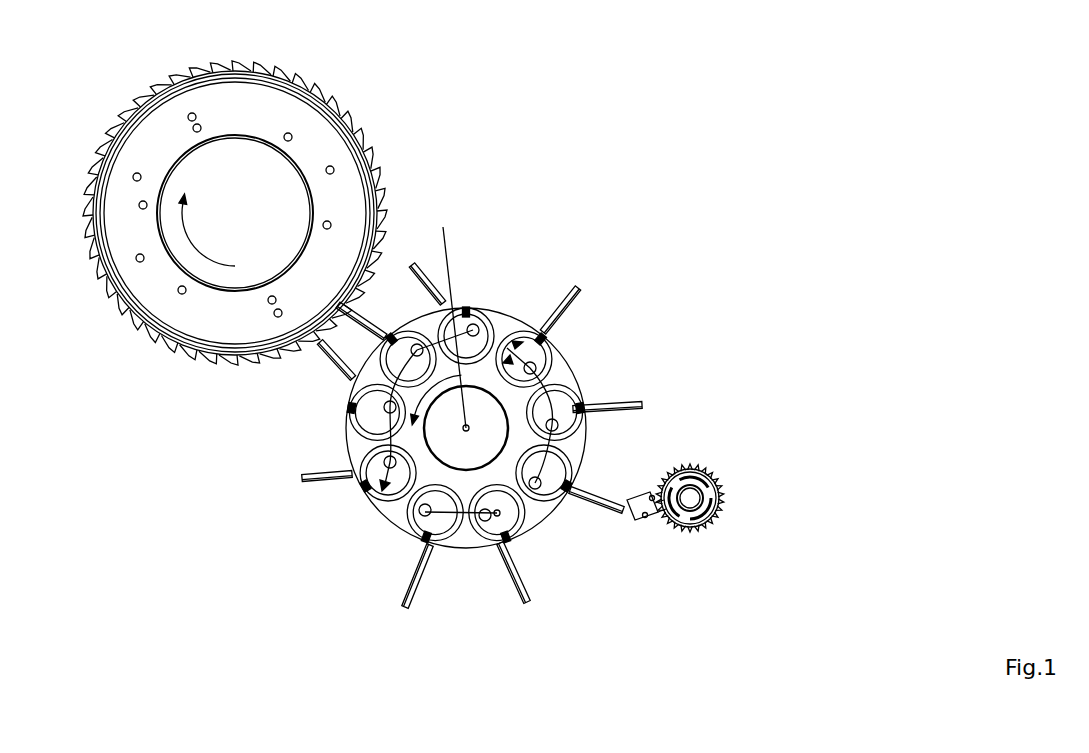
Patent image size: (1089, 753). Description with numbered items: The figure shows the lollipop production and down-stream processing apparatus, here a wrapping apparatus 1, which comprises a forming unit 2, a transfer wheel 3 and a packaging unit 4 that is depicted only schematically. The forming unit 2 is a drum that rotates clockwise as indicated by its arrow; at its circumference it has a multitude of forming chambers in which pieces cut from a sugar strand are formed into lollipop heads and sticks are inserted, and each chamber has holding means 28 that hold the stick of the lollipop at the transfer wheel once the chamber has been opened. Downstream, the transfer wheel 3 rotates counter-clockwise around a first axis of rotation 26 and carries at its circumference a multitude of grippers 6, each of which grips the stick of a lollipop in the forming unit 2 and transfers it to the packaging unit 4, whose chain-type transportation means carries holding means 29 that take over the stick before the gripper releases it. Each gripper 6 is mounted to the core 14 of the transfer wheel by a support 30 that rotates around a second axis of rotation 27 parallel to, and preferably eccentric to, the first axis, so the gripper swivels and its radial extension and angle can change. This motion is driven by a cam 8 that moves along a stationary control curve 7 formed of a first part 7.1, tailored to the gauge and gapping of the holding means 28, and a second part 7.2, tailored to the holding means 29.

The wrapping apparatus 1 is at (702, 133).
The forming unit 2 is at (395, 120).
The transfer wheel 3 is at (568, 250).
The packaging unit 4 is at (725, 440).
The gripper 6 is at (641, 403).
The control curve 7 is at (385, 483).
The first part of the control curve 7.1 is at (383, 423).
The second part of the control curve 7.2 is at (568, 495).
The cam 8 is at (473, 330).
The core 14 is at (353, 443).
The first axis of rotation 26 is at (466, 428).
The second axis of rotation 27 is at (497, 516).
The holding means 28 is at (378, 160).
The holding means 29 is at (651, 518).
The support 30 is at (569, 388).